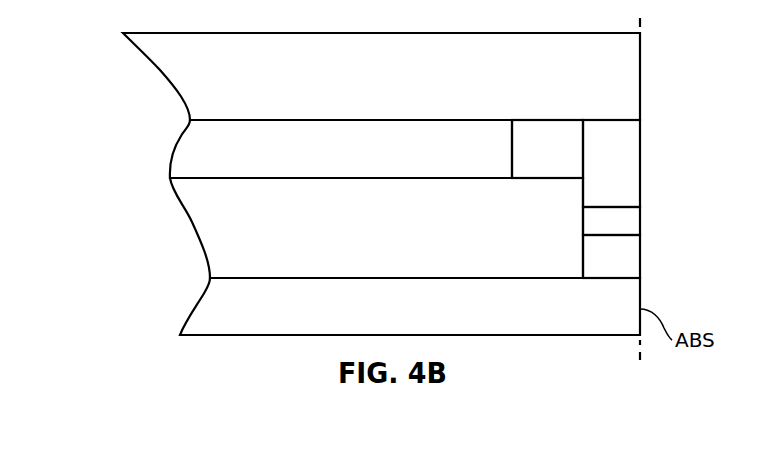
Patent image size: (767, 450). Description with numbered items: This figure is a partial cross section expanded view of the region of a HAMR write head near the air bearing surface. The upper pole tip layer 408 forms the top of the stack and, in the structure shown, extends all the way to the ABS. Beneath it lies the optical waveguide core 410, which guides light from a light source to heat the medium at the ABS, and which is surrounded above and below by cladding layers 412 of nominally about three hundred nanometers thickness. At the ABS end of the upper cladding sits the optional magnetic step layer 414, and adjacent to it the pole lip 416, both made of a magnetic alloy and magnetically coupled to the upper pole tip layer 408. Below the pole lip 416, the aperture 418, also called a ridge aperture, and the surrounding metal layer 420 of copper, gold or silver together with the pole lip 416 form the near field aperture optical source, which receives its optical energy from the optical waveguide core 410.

The upper pole tip layer 408 is at (455, 80).
The optical waveguide core 410 is at (393, 240).
The cladding layers 412 is at (392, 158).
The optional magnetic step layer 414 is at (558, 160).
The pole lip 416 is at (627, 174).
The aperture 418 is at (627, 230).
The metal layer 420 is at (627, 268).